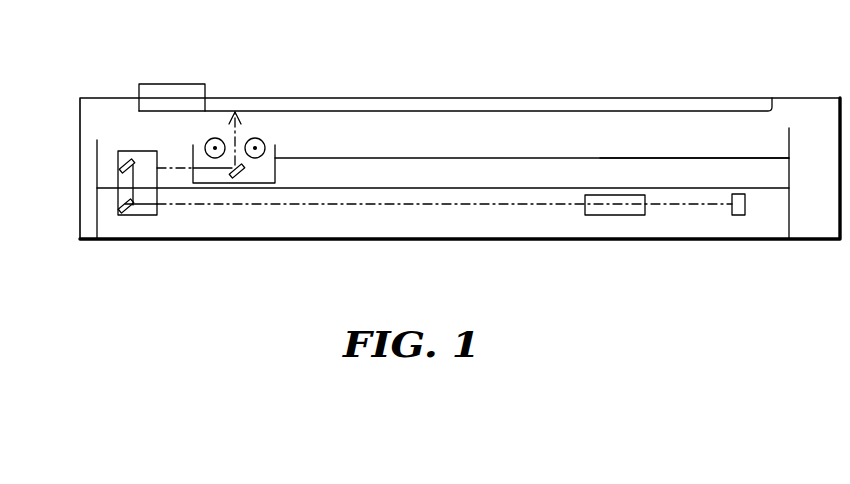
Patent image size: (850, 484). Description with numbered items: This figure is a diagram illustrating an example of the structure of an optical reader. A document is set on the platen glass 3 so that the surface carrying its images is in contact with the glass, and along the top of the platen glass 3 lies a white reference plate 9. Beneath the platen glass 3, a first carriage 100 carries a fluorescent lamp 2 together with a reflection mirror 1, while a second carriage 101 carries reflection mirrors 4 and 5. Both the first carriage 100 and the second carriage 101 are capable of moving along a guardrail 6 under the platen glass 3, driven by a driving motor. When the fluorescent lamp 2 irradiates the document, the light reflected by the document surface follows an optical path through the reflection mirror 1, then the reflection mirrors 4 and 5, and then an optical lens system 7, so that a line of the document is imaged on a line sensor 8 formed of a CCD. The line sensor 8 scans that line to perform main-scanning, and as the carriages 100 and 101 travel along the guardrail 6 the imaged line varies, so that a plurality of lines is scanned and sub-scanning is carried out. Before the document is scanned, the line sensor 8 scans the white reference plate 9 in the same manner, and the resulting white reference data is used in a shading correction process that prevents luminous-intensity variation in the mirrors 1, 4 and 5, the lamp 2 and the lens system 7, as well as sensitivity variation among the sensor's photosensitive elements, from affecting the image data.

The reflection mirror 1 is at (242, 176).
The fluorescent lamp 2 is at (257, 138).
The platen glass 3 is at (533, 97).
The reflection mirror 4 is at (118, 168).
The reflection mirror 5 is at (119, 214).
The guardrail 6 is at (768, 162).
The optical lens system 7 is at (610, 218).
The line sensor 8 is at (737, 217).
The white reference plate 9 is at (158, 84).
The first carriage 100 is at (280, 157).
The second carriage 101 is at (157, 214).